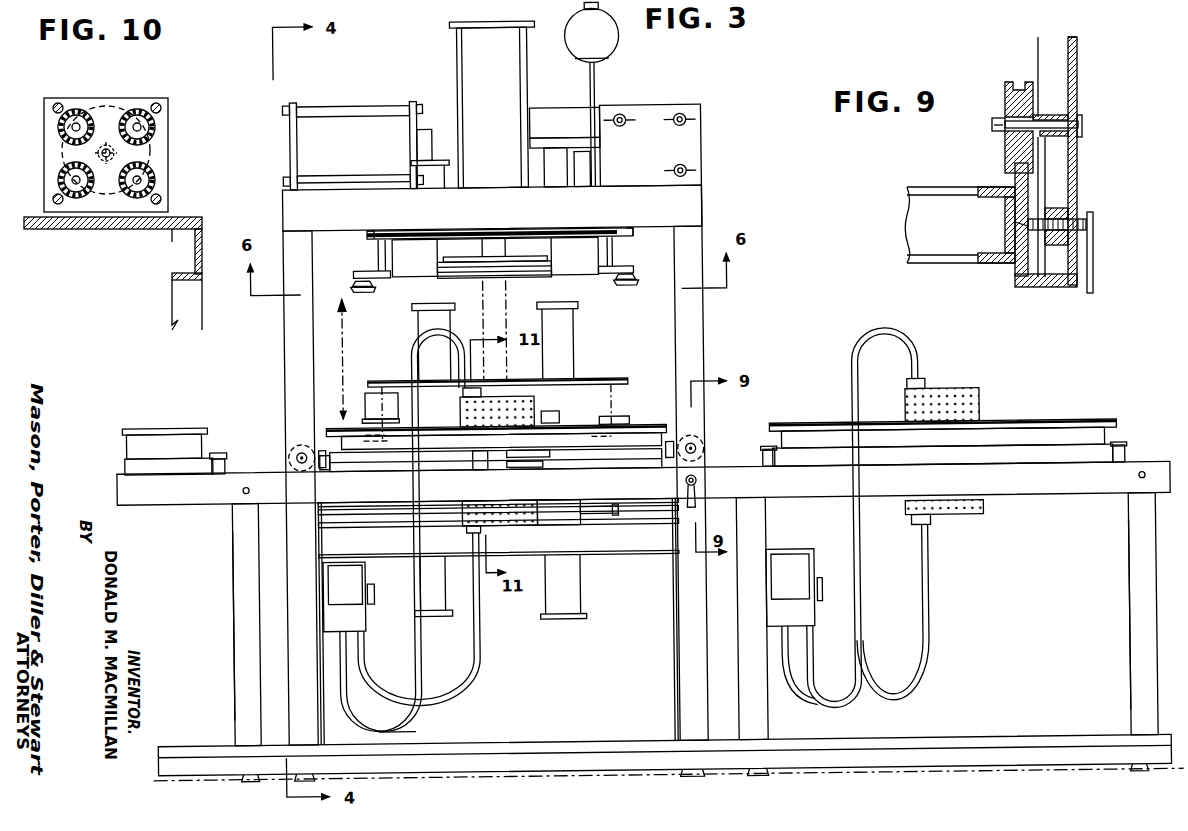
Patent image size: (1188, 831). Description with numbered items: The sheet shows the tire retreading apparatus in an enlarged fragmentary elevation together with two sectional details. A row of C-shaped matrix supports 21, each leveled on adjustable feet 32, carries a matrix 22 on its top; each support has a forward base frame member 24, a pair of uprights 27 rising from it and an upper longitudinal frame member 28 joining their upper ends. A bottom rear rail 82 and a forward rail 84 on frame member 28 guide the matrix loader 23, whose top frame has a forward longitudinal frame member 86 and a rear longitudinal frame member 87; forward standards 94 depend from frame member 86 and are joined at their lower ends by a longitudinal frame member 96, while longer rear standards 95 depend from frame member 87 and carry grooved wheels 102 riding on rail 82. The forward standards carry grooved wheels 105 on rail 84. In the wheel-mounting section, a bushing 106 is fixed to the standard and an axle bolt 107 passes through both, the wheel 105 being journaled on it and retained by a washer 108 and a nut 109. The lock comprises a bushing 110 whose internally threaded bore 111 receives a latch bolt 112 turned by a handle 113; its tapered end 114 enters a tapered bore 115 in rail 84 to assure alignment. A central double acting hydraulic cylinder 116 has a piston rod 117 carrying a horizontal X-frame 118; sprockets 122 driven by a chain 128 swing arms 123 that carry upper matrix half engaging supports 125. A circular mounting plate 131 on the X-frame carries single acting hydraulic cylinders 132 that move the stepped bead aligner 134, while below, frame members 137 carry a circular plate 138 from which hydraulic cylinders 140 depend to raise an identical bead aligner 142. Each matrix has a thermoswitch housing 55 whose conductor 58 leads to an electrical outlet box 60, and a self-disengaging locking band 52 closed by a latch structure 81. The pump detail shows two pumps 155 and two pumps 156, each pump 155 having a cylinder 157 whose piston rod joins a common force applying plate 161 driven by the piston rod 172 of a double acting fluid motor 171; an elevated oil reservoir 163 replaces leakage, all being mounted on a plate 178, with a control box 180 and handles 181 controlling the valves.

In FIG. 3, the matrix support 21 is at (258, 610).
In FIG. 3, the matrix 22 is at (331, 428).
In FIG. 3, the matrix loader 23 is at (170, 427).
In FIG. 3, the longitudinal frame member 24 is at (170, 779).
In FIG. 3, the upright 27 is at (240, 655).
In FIG. 9, the upper longitudinal frame member 28 is at (980, 264).
In FIG. 3, the foot 32 is at (244, 779).
In FIG. 3, the locking band 52 is at (612, 462).
In FIG. 3, the housing 55 is at (538, 408).
In FIG. 3, the conductor 58 is at (417, 672).
In FIG. 3, the electrical outlet box 60 is at (352, 620).
In FIG. 3, the latch structure 81 is at (508, 472).
In FIG. 3, the bottom rear rail 82 is at (170, 757).
In FIG. 9, the forward rail 84 is at (1021, 277).
In FIG. 3, the forward rail 84 is at (205, 505).
In FIG. 3, the forward longitudinal frame member 86 is at (290, 220).
In FIG. 10, the rear longitudinal frame member 87 is at (193, 252).
In FIG. 9, the forward standard 94 is at (1077, 75).
In FIG. 3, the forward standard 94 is at (290, 345).
In FIG. 10, the rear standard 95 is at (178, 300).
In FIG. 3, the rear standard 95 is at (321, 688).
In FIG. 9, the longitudinal frame member 96 is at (1045, 289).
In FIG. 3, the longitudinal frame member 96 is at (610, 517).
In FIG. 3, the wheel 102 is at (380, 735).
In FIG. 9, the wheel 105 is at (1008, 90).
In FIG. 3, the wheel 105 is at (290, 455).
In FIG. 9, the bushing 106 is at (1070, 152).
In FIG. 9, the axle bolt 107 is at (1082, 128).
In FIG. 9, the washer 108 is at (1008, 162).
In FIG. 9, the nut 109 is at (995, 126).
In FIG. 9, the bushing 110 is at (1047, 210).
In FIG. 9, the internally threaded bore 111 is at (1062, 222).
In FIG. 9, the latch bolt 112 is at (1045, 246).
In FIG. 9, the handle 113 is at (1094, 250).
In FIG. 3, the handle 113 is at (712, 500).
In FIG. 9, the tapered end 114 is at (1008, 233).
In FIG. 9, the tapered bore 115 is at (1016, 225).
In FIG. 3, the tapered bore 115 is at (246, 487).
In FIG. 3, the hydraulic cylinder 116 is at (460, 72).
In FIG. 3, the piston rod 117 is at (506, 250).
In FIG. 3, the X-frame 118 is at (570, 270).
In FIG. 3, the sprocket 122 is at (378, 235).
In FIG. 3, the arm 123 is at (366, 272).
In FIG. 3, the upper matrix half engaging support 125 is at (370, 290).
In FIG. 3, the chain 128 is at (466, 232).
In FIG. 3, the circular mounting plate 131 is at (450, 258).
In FIG. 3, the hydraulic cylinder 132 is at (432, 190).
In FIG. 3, the bead aligner 134 is at (528, 280).
In FIG. 3, the frame member 137 is at (605, 557).
In FIG. 3, the circular plate 138 is at (567, 520).
In FIG. 3, the hydraulic cylinder 140 is at (438, 615).
In FIG. 3, the bead aligner 142 is at (560, 503).
In FIG. 10, the pump 155 is at (52, 184).
In FIG. 10, the pump 156 is at (52, 125).
In FIG. 3, the pump 156 is at (545, 108).
In FIG. 3, the cylinder 157 is at (584, 172).
In FIG. 10, the force applying plate 161 is at (150, 153).
In FIG. 3, the oil reservoir 163 is at (612, 45).
In FIG. 10, the double acting fluid motor 171 is at (114, 106).
In FIG. 3, the double acting fluid motor 171 is at (333, 108).
In FIG. 3, the piston rod 172 is at (430, 130).
In FIG. 10, the plate 178 is at (88, 230).
In FIG. 3, the control box 180 is at (642, 110).
In FIG. 3, the handle 181 is at (680, 170).